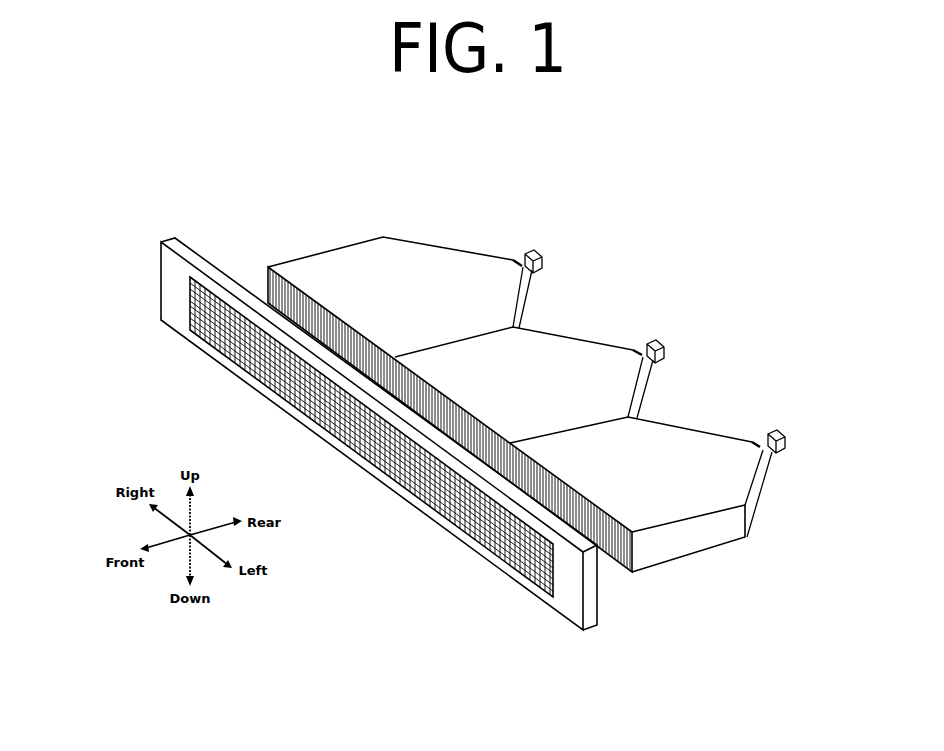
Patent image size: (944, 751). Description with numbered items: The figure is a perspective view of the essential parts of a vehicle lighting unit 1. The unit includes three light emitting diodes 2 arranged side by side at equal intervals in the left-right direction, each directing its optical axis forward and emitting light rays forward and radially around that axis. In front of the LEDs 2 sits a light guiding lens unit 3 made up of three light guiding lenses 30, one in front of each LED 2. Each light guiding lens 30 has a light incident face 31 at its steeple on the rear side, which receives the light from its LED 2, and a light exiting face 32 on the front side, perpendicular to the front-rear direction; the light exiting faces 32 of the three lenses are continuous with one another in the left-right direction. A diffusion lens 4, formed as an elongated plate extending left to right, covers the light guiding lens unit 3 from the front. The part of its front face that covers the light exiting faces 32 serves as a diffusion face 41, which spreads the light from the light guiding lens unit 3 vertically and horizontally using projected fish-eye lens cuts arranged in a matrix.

The vehicle lighting unit 1 is at (655, 203).
The light emitting diode 2 is at (538, 253).
The light guiding lens unit 3 is at (731, 562).
The diffusion lens 4 is at (568, 596).
The light guiding lens 30 is at (592, 455).
The light incident face 31 is at (520, 300).
The light exiting face 32 is at (395, 357).
The diffusion face 41 is at (378, 472).